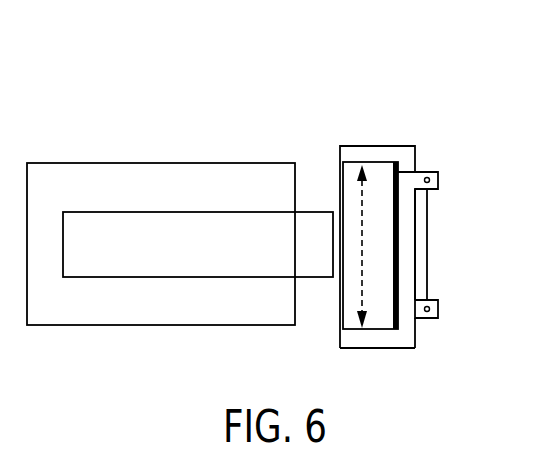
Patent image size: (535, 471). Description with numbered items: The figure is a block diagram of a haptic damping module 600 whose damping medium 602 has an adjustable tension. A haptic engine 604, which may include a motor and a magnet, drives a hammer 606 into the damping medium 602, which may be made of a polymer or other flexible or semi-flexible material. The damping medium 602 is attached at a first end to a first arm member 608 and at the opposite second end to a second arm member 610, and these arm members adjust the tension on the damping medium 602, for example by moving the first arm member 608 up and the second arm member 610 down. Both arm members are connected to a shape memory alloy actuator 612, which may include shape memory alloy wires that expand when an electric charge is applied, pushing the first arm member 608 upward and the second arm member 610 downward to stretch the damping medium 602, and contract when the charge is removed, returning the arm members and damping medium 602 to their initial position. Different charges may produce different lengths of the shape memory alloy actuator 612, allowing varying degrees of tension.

The haptic damping module 600 is at (447, 105).
The damping medium 602 is at (350, 180).
The haptic engine 604 is at (188, 173).
The hammer 606 is at (207, 254).
The first arm member 608 is at (403, 152).
The second arm member 610 is at (410, 337).
The shape memory alloy actuator 612 is at (427, 242).